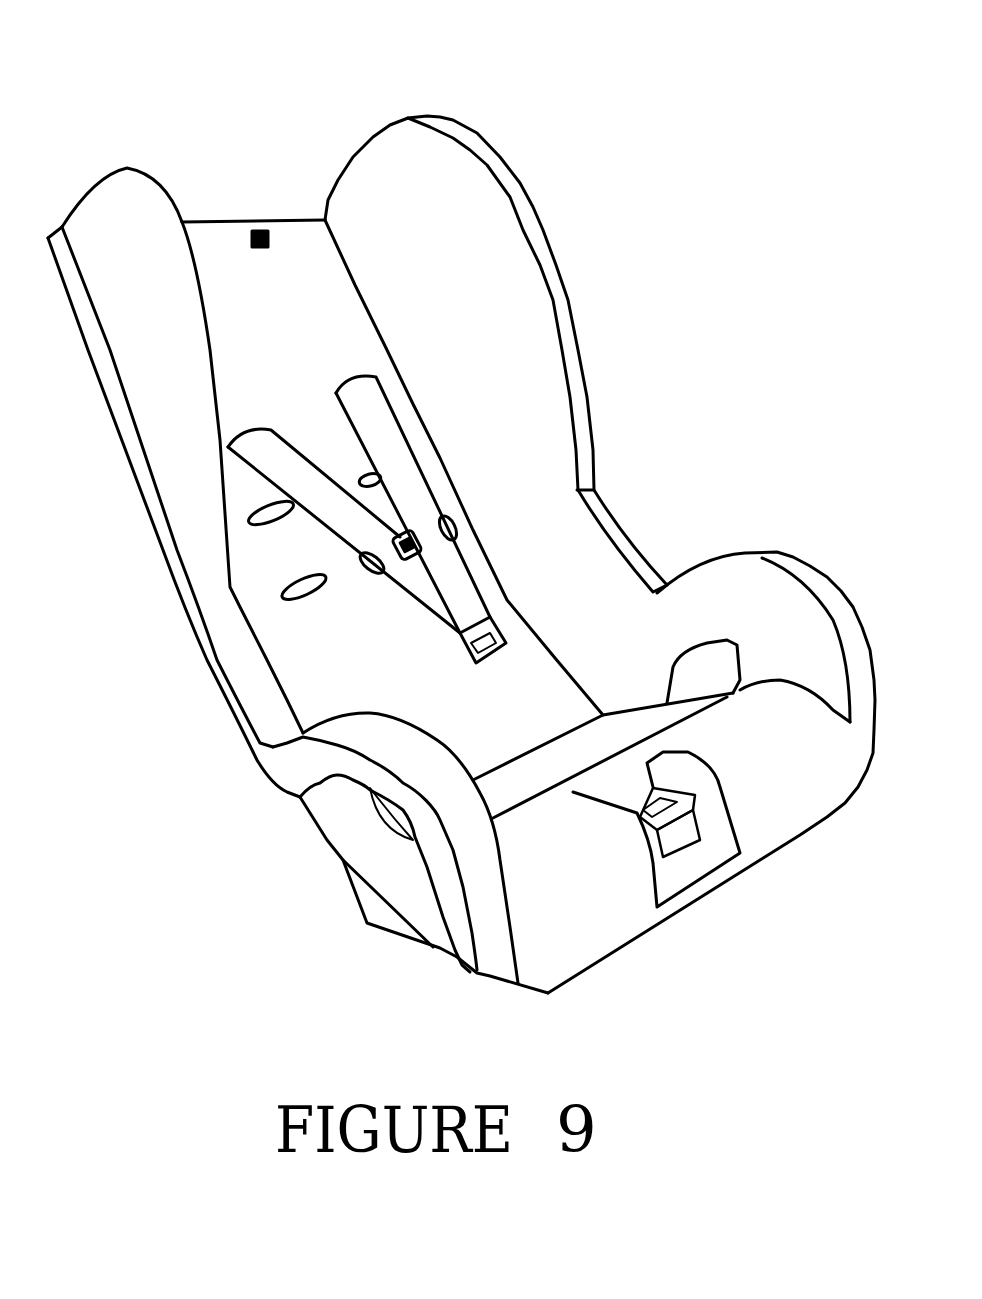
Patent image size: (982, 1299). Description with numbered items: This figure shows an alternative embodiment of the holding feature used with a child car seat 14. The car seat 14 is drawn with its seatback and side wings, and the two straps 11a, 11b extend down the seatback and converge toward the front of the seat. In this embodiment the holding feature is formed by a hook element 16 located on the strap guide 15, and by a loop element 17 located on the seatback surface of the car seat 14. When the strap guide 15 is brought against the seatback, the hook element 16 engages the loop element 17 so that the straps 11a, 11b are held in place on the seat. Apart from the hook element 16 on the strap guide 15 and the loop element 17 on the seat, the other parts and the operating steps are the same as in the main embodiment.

The car seat 14 is at (457, 115).
The loop element 17 is at (273, 243).
The strap 11a is at (292, 440).
The strap 11b is at (342, 420).
The hook element 16 is at (393, 537).
The strap guide 15 is at (373, 573).